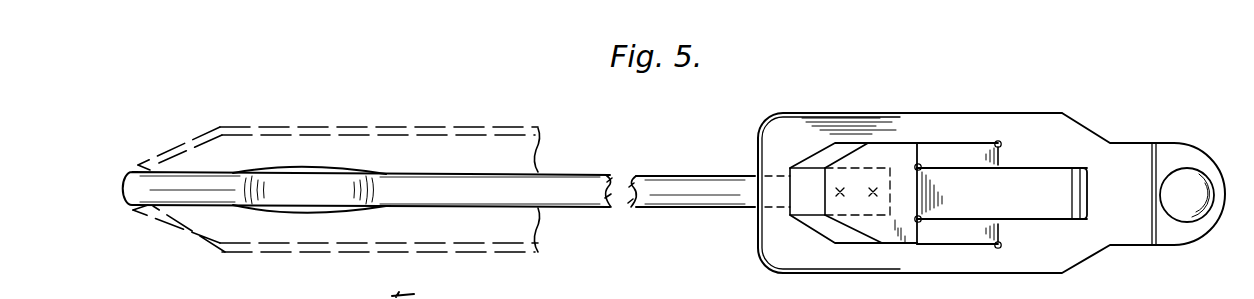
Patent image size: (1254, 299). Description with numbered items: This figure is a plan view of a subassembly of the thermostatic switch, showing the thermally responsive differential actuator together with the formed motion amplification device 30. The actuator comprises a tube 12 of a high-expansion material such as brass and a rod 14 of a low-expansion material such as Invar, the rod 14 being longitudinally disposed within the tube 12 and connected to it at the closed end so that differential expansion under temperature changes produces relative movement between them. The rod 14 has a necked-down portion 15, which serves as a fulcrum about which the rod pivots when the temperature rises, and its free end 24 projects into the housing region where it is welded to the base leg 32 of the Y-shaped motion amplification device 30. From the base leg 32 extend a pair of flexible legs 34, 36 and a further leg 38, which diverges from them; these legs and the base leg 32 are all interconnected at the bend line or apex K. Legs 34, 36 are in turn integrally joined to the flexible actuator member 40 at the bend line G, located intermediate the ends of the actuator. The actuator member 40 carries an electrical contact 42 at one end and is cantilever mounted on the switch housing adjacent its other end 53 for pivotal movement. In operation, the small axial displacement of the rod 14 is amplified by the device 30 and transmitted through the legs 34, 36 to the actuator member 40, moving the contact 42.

The tube 12 is at (423, 128).
The rod 14 is at (656, 186).
The necked-down portion 15 is at (306, 180).
The free end 24 is at (815, 205).
The motion amplification device 30 is at (1116, 118).
The base leg 32 is at (883, 233).
The leg 34 is at (955, 232).
The leg 36 is at (958, 153).
The leg 38 is at (1021, 177).
The flexible actuator member 40 is at (1021, 124).
The electrical contact 42 is at (1189, 178).
The end of actuator member 53 is at (766, 160).
The bend line or apex K is at (921, 234).
The bend line between legs and actuator member G is at (1002, 231).